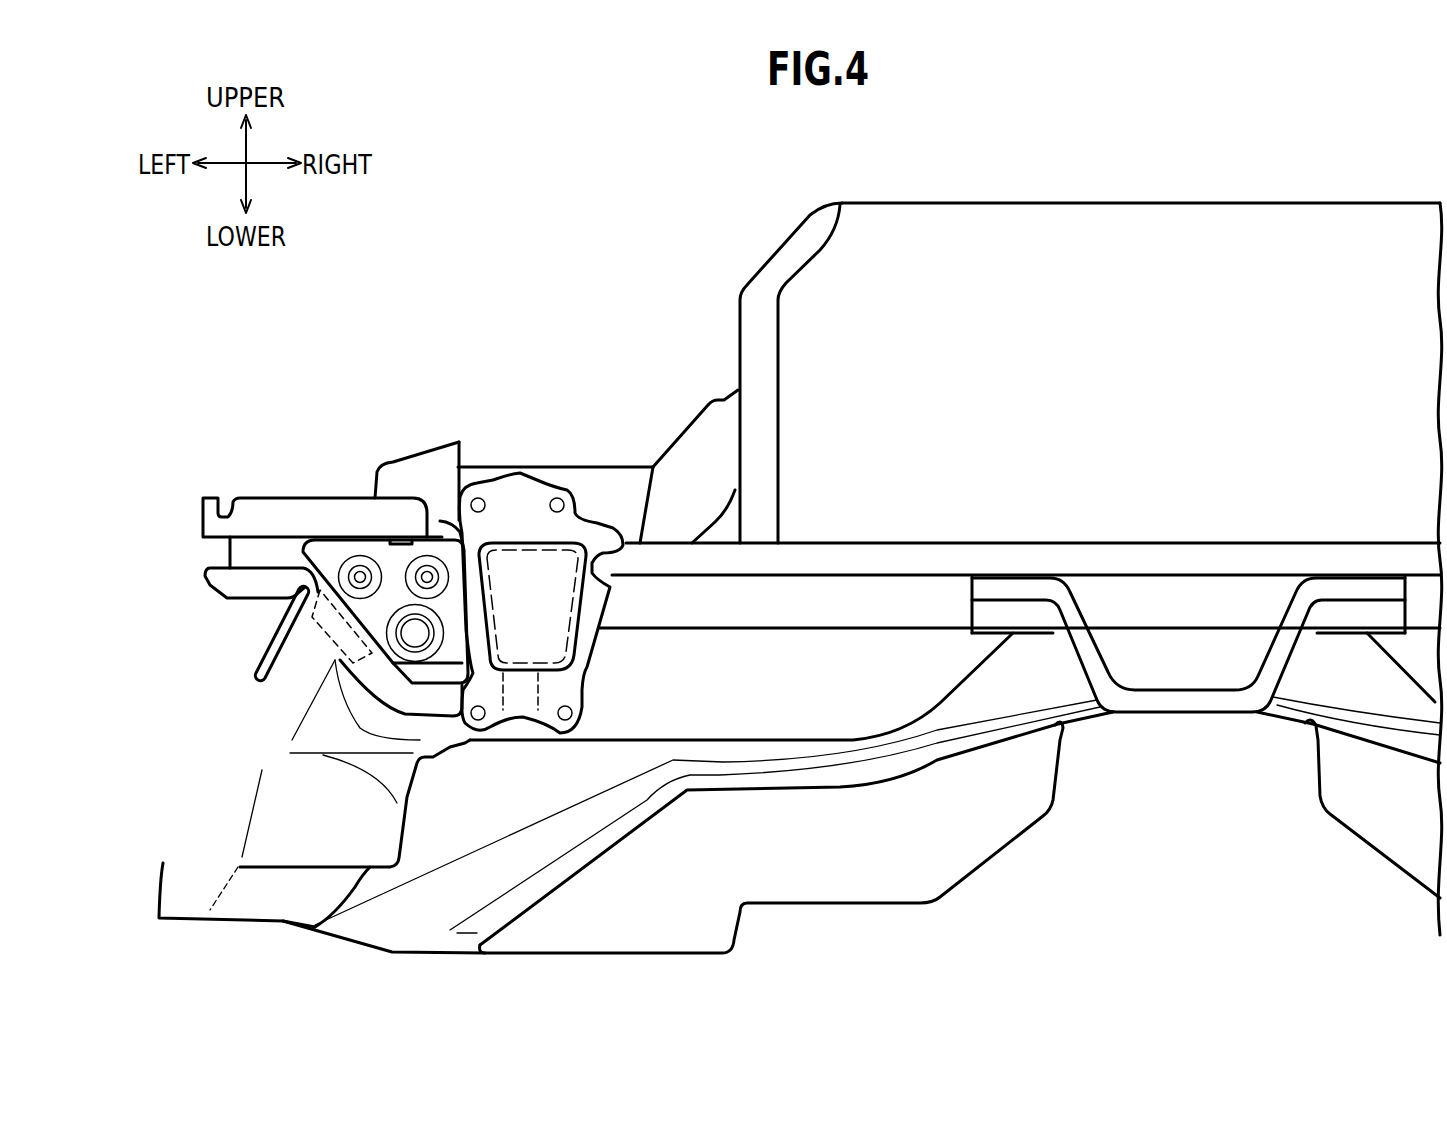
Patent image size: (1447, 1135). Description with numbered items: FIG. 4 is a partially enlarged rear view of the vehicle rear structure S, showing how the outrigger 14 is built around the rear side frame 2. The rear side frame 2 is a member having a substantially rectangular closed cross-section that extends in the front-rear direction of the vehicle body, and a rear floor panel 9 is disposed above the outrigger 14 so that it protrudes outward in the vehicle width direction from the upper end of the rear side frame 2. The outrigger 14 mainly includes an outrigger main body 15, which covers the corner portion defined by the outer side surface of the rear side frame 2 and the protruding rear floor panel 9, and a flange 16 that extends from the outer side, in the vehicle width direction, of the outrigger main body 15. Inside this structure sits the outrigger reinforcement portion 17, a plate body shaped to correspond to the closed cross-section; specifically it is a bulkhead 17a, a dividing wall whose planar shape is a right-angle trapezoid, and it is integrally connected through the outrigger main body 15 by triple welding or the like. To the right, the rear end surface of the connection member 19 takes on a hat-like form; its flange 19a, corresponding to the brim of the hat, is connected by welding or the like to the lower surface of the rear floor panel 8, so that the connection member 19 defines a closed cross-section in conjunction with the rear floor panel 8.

The vehicle rear structure S is at (622, 296).
The rear side frame 2 is at (530, 543).
The rear floor panel 8 is at (893, 558).
The rear floor panel 9 is at (312, 512).
The outrigger 14 is at (148, 668).
The outrigger main body 15 is at (388, 688).
The flange 16 is at (243, 592).
The outrigger reinforcement portion 17 is at (349, 546).
The bulkhead 17a is at (390, 536).
The connection member 19 is at (1188, 703).
The flange 19a is at (1018, 584).